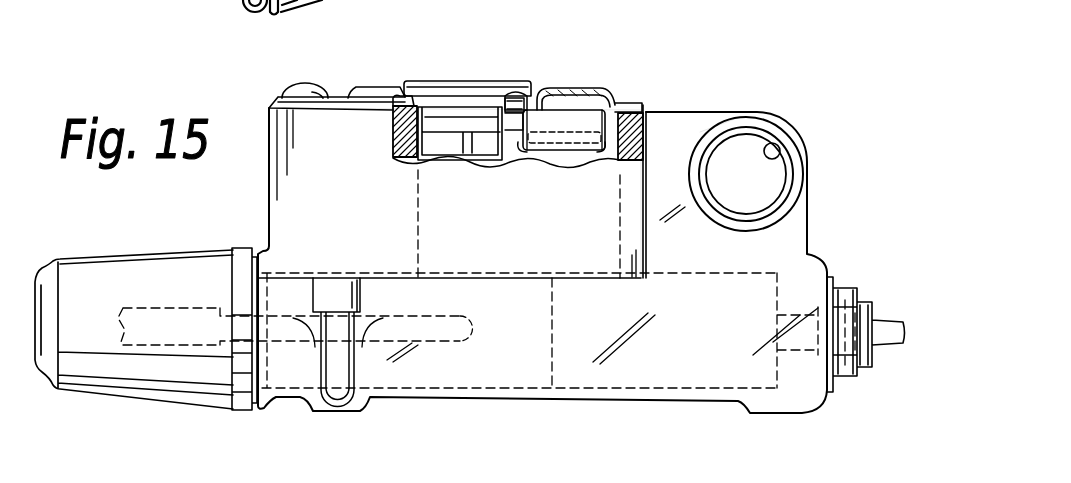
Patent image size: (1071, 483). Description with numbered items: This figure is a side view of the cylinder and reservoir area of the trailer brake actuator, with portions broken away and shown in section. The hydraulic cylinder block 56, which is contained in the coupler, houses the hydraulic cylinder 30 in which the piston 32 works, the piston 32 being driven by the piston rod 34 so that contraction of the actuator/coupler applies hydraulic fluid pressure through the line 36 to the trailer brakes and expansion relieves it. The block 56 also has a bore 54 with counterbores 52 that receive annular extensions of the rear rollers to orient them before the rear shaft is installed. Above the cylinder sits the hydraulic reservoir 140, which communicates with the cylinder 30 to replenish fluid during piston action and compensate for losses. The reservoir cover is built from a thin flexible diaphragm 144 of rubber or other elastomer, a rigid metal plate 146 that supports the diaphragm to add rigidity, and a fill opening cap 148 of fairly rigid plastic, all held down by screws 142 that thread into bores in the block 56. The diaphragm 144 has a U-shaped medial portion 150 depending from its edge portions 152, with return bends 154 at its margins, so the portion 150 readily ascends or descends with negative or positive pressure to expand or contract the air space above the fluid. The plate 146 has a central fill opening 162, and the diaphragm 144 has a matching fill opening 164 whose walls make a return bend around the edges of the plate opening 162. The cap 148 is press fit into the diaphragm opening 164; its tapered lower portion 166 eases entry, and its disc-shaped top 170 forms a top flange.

The hydraulic cylinder 30 is at (712, 392).
The piston 32 is at (553, 345).
The piston rod 34 is at (450, 340).
The line 36 is at (892, 320).
The counterbores 52 is at (763, 218).
The bore 54 is at (777, 153).
The hydraulic cylinder block 56 is at (675, 157).
The hydraulic reservoir 140 is at (420, 178).
The screws 142 is at (305, 86).
The flexible diaphragm 144 is at (515, 130).
The rigid plate 146 is at (366, 86).
The fill opening cap 148 is at (485, 103).
The U-shaped medial portion 150 is at (573, 117).
The edge portions 152 is at (650, 113).
The return bends 154 is at (522, 148).
The central fill opening 162 is at (427, 100).
The diaphragm fill opening 164 is at (523, 87).
The lower portion of cap 166 is at (443, 120).
The top of cap 170 is at (482, 77).